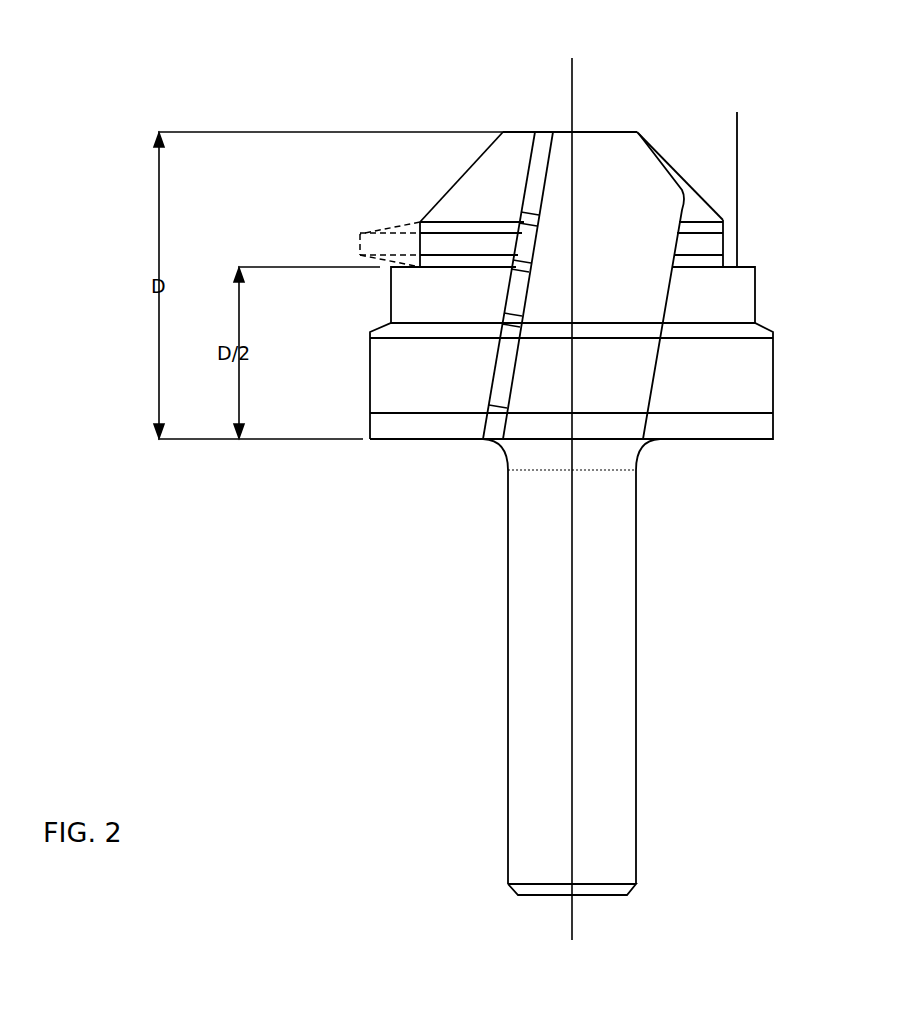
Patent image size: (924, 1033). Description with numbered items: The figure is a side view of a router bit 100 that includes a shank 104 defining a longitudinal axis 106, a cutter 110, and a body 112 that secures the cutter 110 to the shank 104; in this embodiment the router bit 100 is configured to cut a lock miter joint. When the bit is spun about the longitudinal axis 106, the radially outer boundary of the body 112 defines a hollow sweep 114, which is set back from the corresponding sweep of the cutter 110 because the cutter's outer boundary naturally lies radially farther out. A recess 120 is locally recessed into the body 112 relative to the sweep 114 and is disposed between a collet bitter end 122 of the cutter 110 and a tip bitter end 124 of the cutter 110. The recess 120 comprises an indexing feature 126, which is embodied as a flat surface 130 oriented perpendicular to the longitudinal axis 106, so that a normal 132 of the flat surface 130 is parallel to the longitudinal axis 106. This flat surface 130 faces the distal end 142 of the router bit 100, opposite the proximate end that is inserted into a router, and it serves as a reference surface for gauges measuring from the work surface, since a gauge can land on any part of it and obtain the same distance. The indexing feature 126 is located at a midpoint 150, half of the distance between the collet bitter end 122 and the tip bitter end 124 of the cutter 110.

The router bit 100 is at (354, 112).
The shank 104 is at (602, 726).
The longitudinal axis 106 is at (574, 103).
The cutter 110 is at (543, 208).
The body 112 is at (460, 197).
The sweep 114 is at (359, 247).
The recess 120 is at (392, 246).
The collet bitter end 122 is at (497, 442).
The tip bitter end 124 is at (546, 130).
The indexing feature 126 is at (393, 268).
The flat surface 130 is at (641, 295).
The normal 132 is at (735, 165).
The distal end 142 is at (518, 130).
The midpoint 150 is at (268, 264).